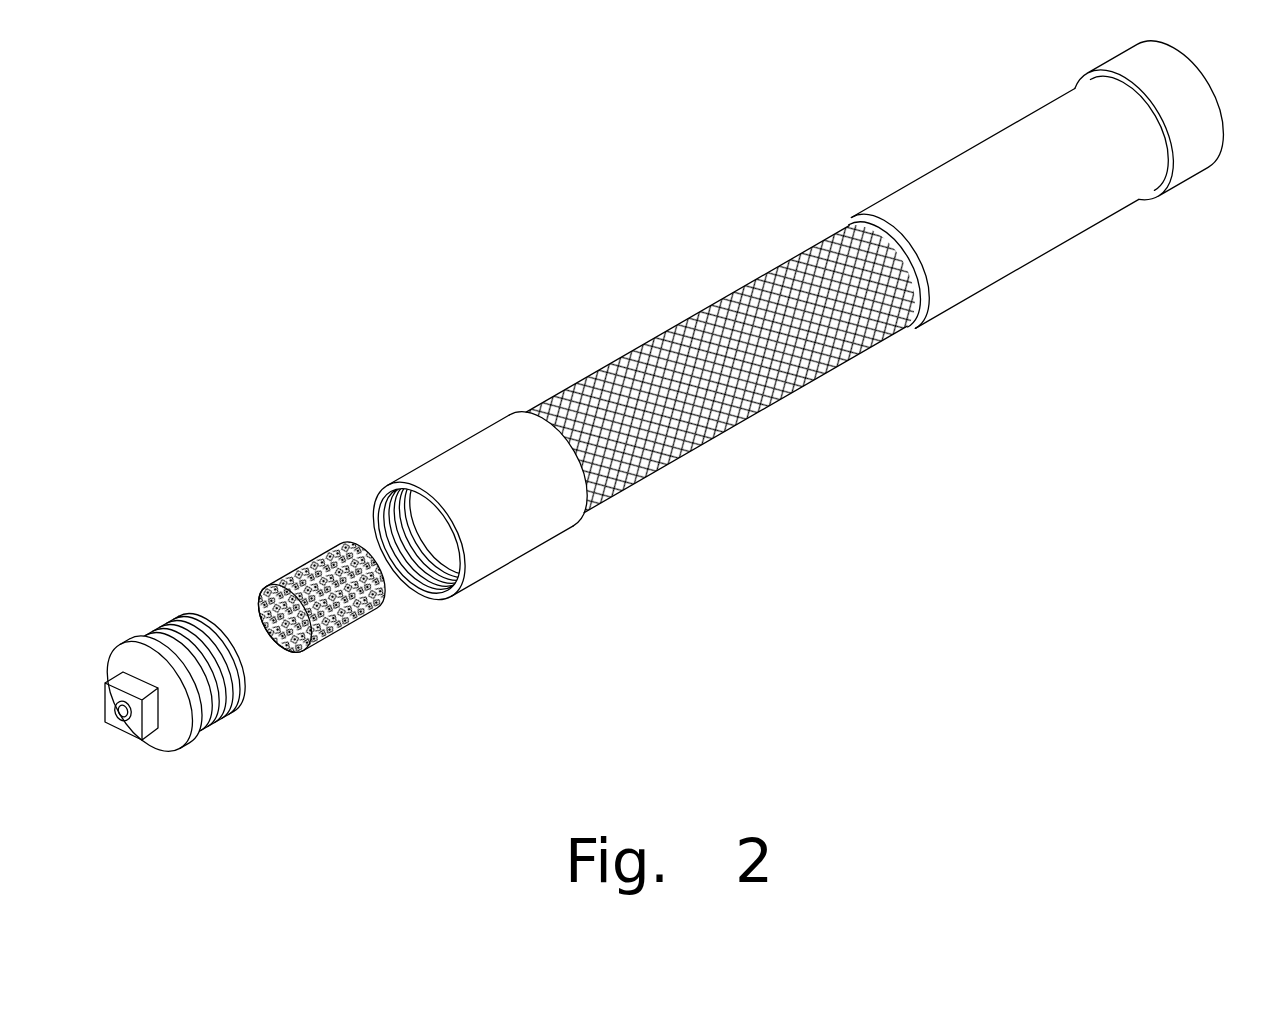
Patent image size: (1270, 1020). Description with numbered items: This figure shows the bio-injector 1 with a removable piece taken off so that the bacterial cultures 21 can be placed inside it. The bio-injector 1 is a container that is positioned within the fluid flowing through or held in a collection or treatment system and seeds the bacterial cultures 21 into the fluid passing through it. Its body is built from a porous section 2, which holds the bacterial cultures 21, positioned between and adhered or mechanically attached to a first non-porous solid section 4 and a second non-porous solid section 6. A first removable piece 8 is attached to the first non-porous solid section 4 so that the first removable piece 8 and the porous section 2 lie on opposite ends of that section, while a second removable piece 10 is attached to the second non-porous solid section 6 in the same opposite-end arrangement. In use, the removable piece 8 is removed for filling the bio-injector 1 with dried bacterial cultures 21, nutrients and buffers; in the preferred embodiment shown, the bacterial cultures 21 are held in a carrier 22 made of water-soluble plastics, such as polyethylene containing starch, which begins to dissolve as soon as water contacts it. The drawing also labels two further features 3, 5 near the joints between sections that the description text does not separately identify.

The bio-injector 1 is at (642, 189).
The porous section 2 is at (793, 390).
The tube end 3 is at (531, 422).
The first non-porous solid section 4 is at (523, 555).
The retaining ring 5 is at (892, 233).
The second non-porous solid section 6 is at (1030, 243).
The first removable piece 8 is at (195, 743).
The second removable piece 10 is at (1195, 177).
The bacterial cultures 21 is at (373, 620).
The carrier 22 is at (313, 650).